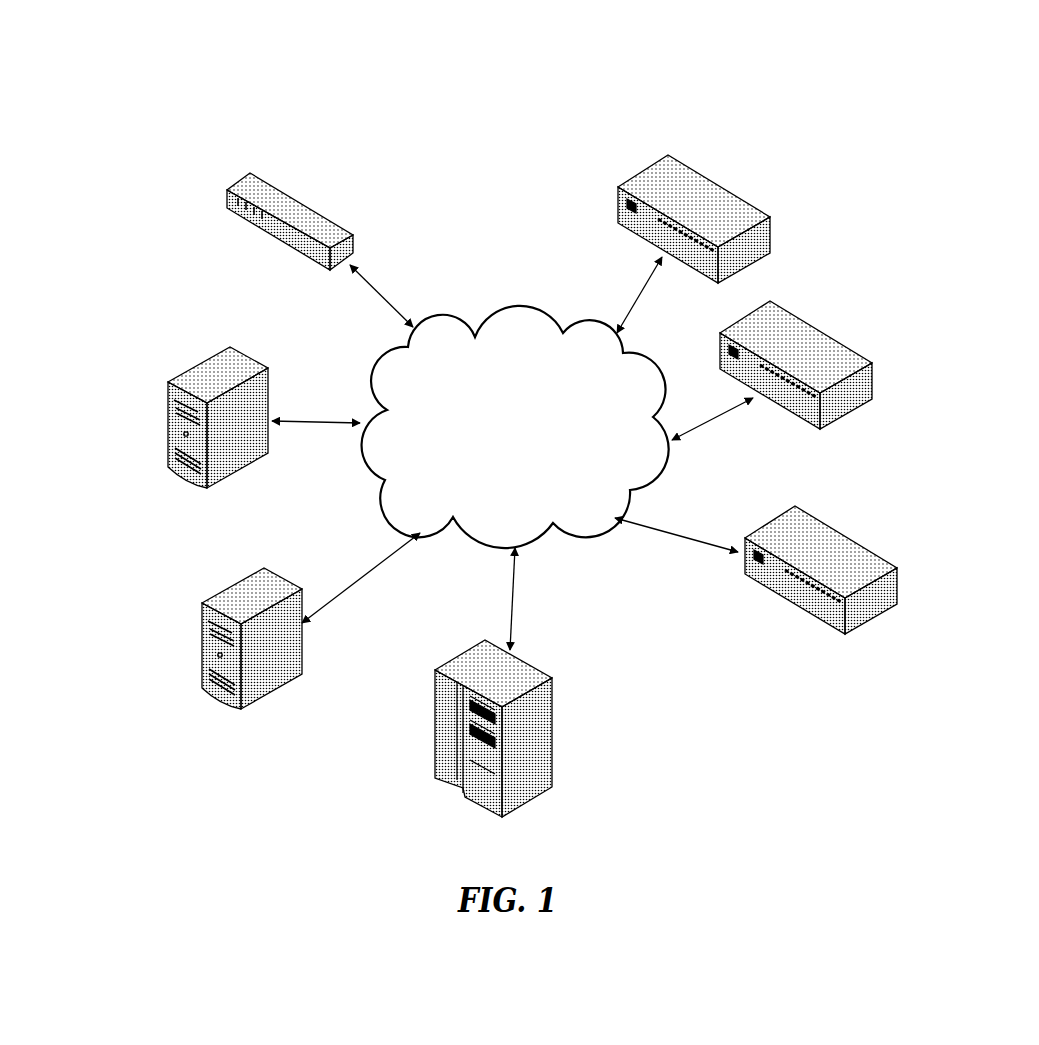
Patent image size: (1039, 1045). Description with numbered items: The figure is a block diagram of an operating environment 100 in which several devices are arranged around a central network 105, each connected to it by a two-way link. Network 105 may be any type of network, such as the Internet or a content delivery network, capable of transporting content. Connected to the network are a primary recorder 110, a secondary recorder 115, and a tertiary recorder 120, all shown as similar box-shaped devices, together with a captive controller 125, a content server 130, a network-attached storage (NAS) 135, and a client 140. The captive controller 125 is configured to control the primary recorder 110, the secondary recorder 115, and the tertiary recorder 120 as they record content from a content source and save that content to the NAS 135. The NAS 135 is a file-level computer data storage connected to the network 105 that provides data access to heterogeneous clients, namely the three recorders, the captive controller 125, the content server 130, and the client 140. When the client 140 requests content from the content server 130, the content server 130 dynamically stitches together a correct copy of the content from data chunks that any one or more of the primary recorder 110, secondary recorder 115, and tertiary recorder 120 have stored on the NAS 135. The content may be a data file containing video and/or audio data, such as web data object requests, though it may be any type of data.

The operating environment 100 is at (557, 62).
The network 105 is at (498, 447).
The primary recorder 110 is at (738, 190).
The secondary recorder 115 is at (817, 323).
The tertiary recorder 120 is at (860, 538).
The captive controller 125 is at (325, 212).
The content server 130 is at (193, 365).
The network-attached storage (NAS) 135 is at (555, 725).
The client 140 is at (228, 585).